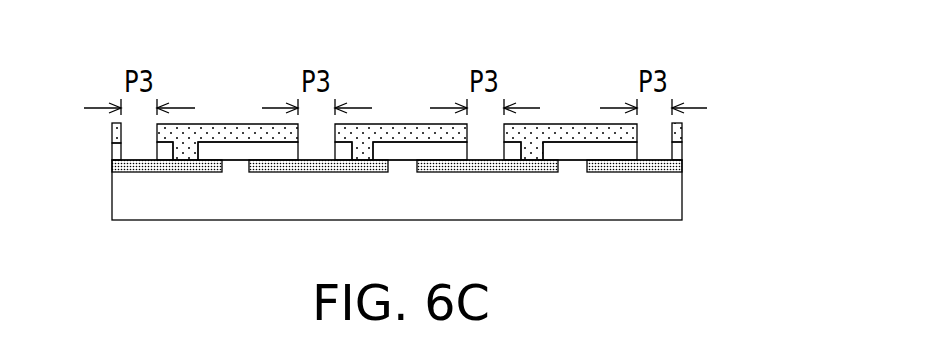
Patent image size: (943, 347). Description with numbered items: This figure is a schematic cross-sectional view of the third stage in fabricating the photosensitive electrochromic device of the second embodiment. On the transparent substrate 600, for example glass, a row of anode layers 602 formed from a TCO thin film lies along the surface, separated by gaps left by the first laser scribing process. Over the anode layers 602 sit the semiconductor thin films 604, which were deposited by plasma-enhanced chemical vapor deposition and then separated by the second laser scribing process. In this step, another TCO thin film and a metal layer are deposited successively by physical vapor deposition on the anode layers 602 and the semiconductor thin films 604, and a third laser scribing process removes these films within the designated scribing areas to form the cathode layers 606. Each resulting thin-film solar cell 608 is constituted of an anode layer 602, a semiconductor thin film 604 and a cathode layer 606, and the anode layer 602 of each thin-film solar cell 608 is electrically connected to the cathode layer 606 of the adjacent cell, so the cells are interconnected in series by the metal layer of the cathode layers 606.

The transparent substrate 600 is at (672, 212).
The anode layer 602 is at (682, 164).
The semiconductor thin film 604 is at (112, 149).
The cathode layer 606 is at (223, 140).
The thin-film solar cell 608 is at (431, 109).